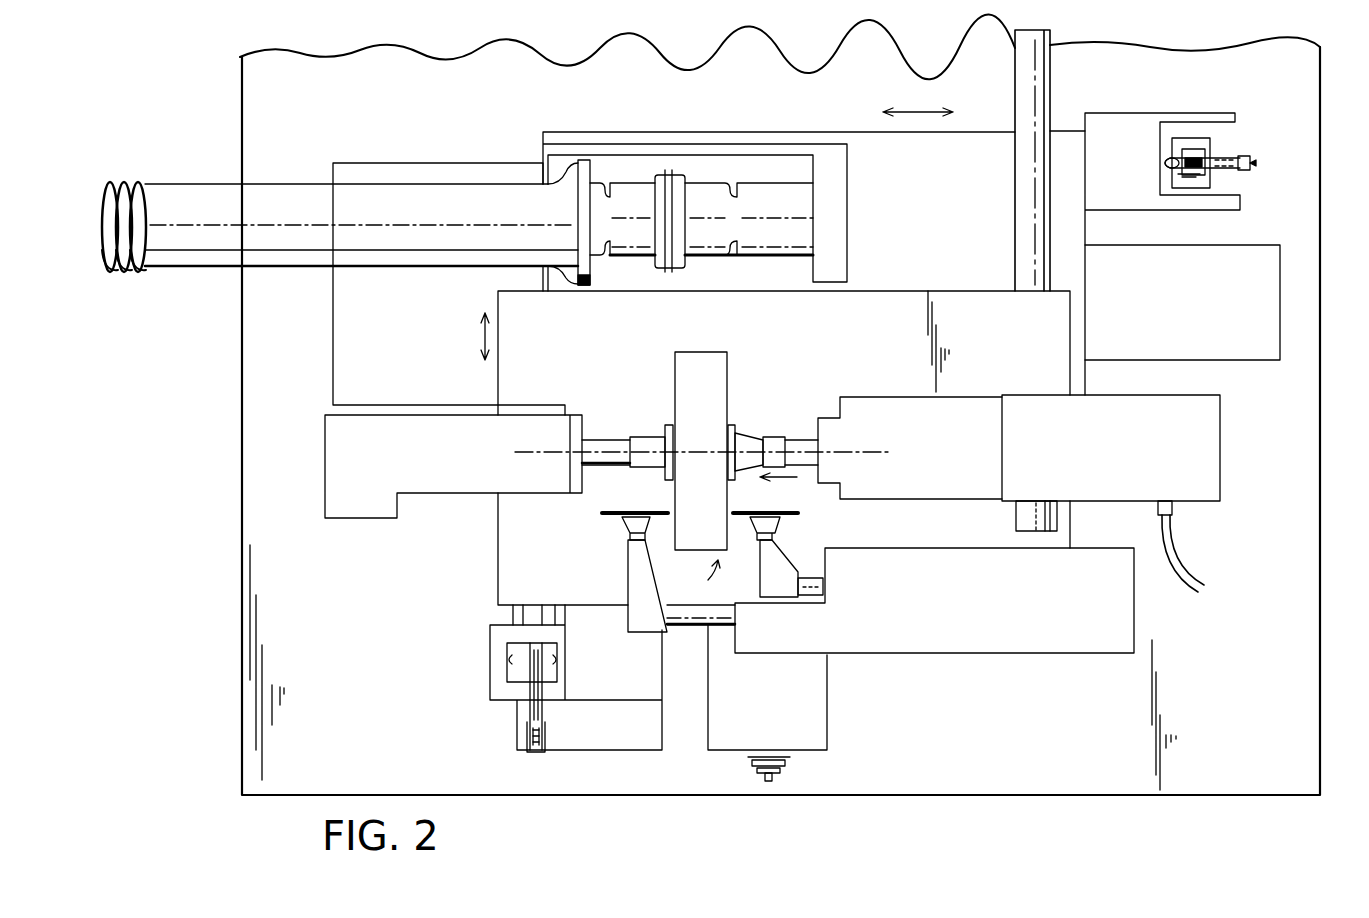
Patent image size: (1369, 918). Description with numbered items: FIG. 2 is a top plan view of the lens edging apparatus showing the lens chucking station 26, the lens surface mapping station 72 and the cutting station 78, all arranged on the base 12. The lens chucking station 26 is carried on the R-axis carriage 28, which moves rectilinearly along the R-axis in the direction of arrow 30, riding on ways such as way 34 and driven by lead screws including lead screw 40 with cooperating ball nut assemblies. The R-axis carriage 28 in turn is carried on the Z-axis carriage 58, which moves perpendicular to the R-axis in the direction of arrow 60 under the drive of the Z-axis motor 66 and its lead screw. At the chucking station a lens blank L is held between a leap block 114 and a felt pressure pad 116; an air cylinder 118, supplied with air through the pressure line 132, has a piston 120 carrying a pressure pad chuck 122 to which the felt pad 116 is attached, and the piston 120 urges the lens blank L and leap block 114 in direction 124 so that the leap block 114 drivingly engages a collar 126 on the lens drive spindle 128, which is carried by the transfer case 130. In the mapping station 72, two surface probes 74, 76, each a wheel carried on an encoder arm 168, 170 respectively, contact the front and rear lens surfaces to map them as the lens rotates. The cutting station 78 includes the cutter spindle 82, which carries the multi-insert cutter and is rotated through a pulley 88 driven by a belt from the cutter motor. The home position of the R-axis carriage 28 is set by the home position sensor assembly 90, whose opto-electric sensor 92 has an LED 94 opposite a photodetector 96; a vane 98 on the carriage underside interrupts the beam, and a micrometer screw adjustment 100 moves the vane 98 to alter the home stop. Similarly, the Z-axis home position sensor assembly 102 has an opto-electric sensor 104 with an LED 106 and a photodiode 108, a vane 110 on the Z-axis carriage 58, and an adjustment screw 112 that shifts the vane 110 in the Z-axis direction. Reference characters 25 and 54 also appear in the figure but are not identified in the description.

The base 12 is at (1320, 512).
The optical axis 25 is at (852, 462).
The lens chucking station 26 is at (766, 340).
The R-axis carriage 28 is at (498, 592).
The arrow 30 is at (485, 333).
The way 34 is at (1058, 520).
The lead screw 40 is at (785, 786).
The support column 54 is at (752, 772).
The Z-axis carriage 58 is at (1087, 228).
The arrow 60 is at (905, 110).
The Z-axis motor 66 is at (1248, 252).
The lens surface mapping station 72 is at (695, 578).
The surface probe 74 is at (630, 530).
The surface probe 76 is at (778, 525).
The cutting station 78 is at (734, 114).
The cutter spindle 82 is at (220, 192).
The pulley 88 is at (96, 185).
The home position sensor assembly 90 is at (535, 696).
The opto-electric sensor 92 is at (515, 645).
The LED 94 is at (560, 660).
The photodetector 96 is at (508, 660).
The vane 98 is at (545, 708).
The screw adjustment 100 is at (535, 755).
The home position sensor assembly 102 is at (1205, 128).
The opto-electric sensor 104 is at (1208, 148).
The LED 106 is at (1198, 150).
The photodiode 108 is at (1203, 172).
The vane 110 is at (1172, 162).
The adjustment screw 112 is at (1250, 165).
The leap block 114 is at (668, 432).
The felt pressure pad 116 is at (732, 428).
The air cylinder 118 is at (1183, 408).
The piston 120 is at (803, 440).
The pressure pad chuck 122 is at (750, 433).
The direction 124 is at (792, 485).
The collar 126 is at (636, 437).
The lens drive spindle 128 is at (598, 440).
The transfer case 130 is at (527, 425).
The pressure line 132 is at (1190, 562).
The encoder arm 168 is at (720, 622).
The encoder arm 170 is at (823, 572).
The lens blank L is at (710, 352).